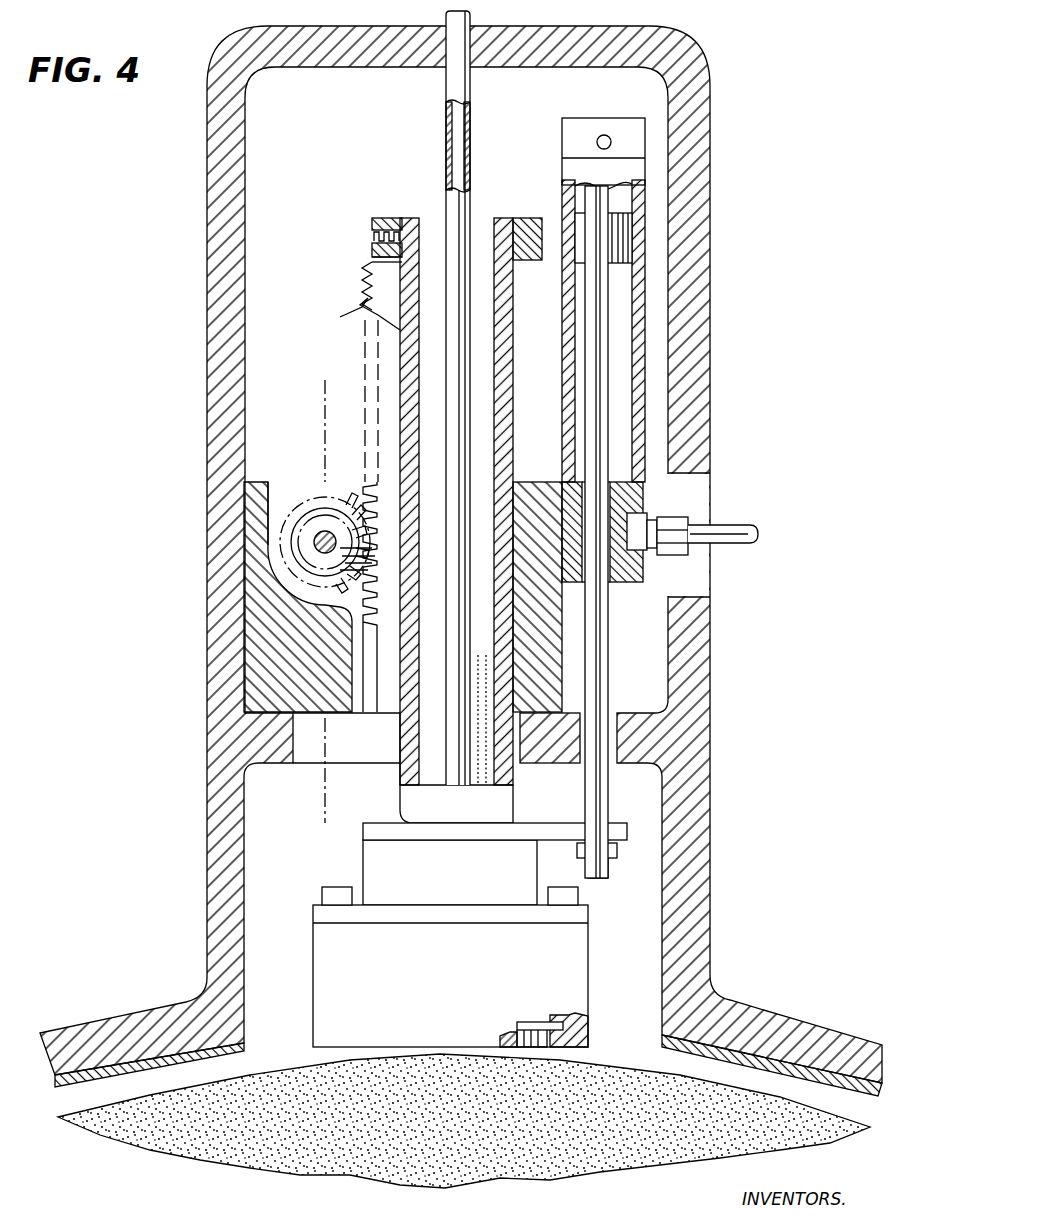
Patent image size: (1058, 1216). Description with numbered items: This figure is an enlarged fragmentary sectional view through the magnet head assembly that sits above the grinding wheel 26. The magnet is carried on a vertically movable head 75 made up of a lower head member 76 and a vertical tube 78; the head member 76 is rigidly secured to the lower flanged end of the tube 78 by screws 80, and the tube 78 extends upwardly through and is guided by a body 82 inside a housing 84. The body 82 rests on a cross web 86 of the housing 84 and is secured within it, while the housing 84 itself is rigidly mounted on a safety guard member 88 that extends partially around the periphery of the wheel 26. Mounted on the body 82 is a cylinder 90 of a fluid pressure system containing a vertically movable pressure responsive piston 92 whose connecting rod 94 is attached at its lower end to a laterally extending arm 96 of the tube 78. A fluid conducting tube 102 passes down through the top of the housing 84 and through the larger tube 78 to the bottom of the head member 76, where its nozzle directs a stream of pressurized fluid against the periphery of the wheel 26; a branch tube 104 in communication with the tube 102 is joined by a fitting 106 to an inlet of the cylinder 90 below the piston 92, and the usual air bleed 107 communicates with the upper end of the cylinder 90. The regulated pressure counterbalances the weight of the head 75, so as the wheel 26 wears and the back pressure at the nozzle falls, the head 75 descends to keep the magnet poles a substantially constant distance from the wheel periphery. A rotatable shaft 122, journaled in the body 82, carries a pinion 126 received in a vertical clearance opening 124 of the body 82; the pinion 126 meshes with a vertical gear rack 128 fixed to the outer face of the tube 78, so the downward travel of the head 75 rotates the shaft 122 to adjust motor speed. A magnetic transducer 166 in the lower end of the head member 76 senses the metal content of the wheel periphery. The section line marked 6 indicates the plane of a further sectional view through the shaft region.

The section line 6- 6 is at (340, 390).
The grinding wheel 26 is at (342, 1170).
The vertically movable head 75 is at (340, 836).
The lower head member 76 is at (330, 962).
The vertical tube 78 is at (490, 806).
The screws 80 is at (330, 897).
The body 82 is at (262, 662).
The housing 84 is at (222, 762).
The cross web 86 is at (648, 733).
The safety guard member 88 is at (240, 1039).
The cylinder 90 is at (645, 368).
The piston 92 is at (620, 238).
The connecting rod 94 is at (602, 671).
The laterally extending arm 96 is at (617, 832).
The fluid conducting tube 102 is at (445, 143).
The branch tube 104 is at (734, 545).
The fitting 106 is at (680, 520).
The air bleed 107 is at (604, 134).
The rotatable shaft 122 is at (325, 540).
The vertical clearance opening 124 is at (268, 512).
The pinion 126 is at (295, 553).
The vertical gear rack 128 is at (362, 307).
The magnetic transducer 166 is at (545, 1022).